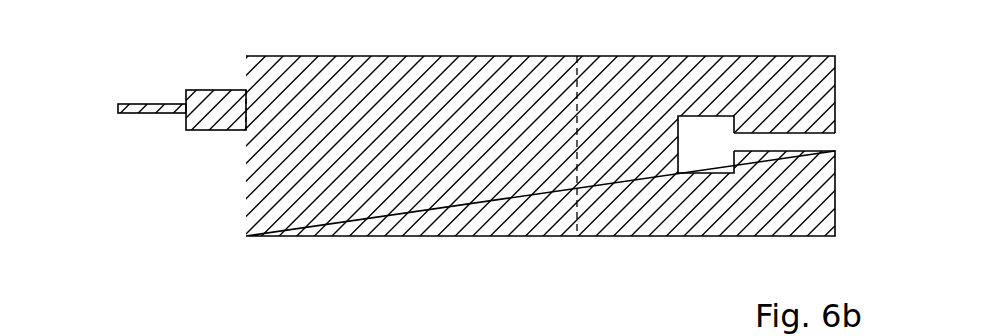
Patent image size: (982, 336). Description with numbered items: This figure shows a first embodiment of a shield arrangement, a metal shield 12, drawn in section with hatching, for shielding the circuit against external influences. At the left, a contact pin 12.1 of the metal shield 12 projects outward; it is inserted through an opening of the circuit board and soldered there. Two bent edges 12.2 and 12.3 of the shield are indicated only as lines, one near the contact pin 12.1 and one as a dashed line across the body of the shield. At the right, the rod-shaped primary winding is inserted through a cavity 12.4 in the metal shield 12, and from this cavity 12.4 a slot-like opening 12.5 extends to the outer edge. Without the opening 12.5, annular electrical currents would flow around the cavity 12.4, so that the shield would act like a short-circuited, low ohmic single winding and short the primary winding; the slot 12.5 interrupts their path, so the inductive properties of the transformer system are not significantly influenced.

The metal shield 12 is at (450, 215).
The contact pin 12.1 is at (153, 112).
The bent edge 12.2 is at (247, 118).
The bent edge 12.3 is at (582, 207).
The cavity 12.4 is at (692, 127).
The slot-like opening 12.5 is at (773, 142).